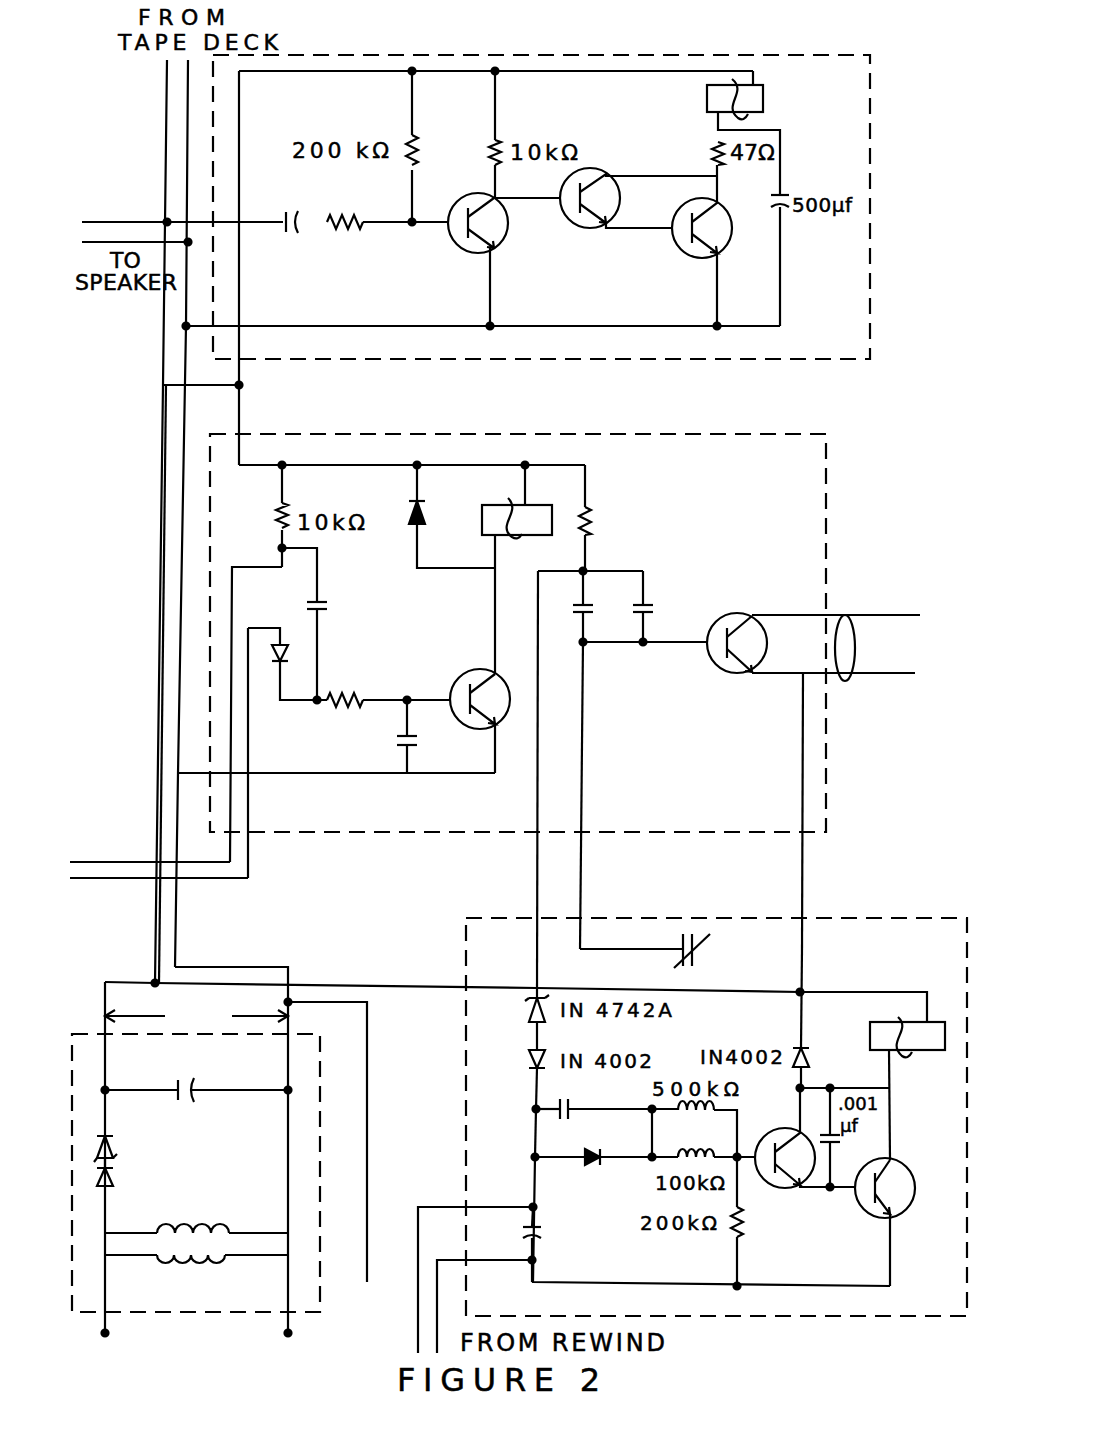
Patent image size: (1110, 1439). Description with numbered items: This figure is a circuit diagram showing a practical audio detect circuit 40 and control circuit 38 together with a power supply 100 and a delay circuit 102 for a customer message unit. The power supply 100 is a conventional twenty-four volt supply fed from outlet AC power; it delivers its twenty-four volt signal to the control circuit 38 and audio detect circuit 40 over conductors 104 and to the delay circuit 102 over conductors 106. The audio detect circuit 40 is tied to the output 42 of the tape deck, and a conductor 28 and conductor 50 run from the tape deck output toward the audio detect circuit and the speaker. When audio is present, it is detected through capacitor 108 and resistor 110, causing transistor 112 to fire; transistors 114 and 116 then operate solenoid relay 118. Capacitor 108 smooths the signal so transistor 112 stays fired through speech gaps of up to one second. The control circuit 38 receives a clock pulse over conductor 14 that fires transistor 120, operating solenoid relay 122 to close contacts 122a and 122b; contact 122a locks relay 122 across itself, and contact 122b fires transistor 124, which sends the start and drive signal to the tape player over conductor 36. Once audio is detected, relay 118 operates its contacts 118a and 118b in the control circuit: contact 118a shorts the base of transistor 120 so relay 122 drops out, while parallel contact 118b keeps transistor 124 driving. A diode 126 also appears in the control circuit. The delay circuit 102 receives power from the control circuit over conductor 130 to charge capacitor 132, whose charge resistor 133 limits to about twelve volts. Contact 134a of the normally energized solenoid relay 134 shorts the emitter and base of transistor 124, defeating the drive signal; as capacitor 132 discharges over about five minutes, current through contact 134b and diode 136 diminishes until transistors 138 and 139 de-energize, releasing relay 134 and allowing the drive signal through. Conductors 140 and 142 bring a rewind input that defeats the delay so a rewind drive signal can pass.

The conductor 14 is at (256, 845).
The conductor 28 is at (188, 222).
The conductor 36 is at (843, 619).
The control circuit 38 is at (826, 727).
The audio detect circuit 40 is at (870, 330).
The output of the tape deck 42 is at (165, 88).
The conductor 50 is at (105, 230).
The power supply 100 is at (320, 1280).
The delay circuit 102 is at (875, 1317).
The conductors 104 is at (148, 605).
The conductors 106 is at (320, 970).
The capacitor 108 is at (292, 212).
The resistor 110 is at (337, 233).
The transistor 112 is at (510, 222).
The transistor 114 is at (618, 212).
The transistor 116 is at (752, 213).
The solenoid relay 118 is at (770, 108).
The contact 118a is at (398, 750).
The contact 118b is at (570, 600).
The transistor 120 is at (490, 730).
The solenoid relay 122 is at (535, 484).
The contact 122a is at (350, 583).
The contact 122b is at (633, 600).
The transistor 124 is at (746, 610).
The diode 126 is at (432, 520).
The conductor 130 is at (538, 860).
The capacitor 132 is at (538, 1235).
The resistor 133 is at (590, 510).
The solenoid relay 134 is at (915, 1050).
The contact 134a is at (671, 948).
The contact 134b is at (607, 1098).
The diode 136 is at (584, 1155).
The transistor 138 is at (742, 1140).
The transistor 139 is at (888, 1160).
The conductor 140 is at (467, 1210).
The conductor 142 is at (467, 1267).